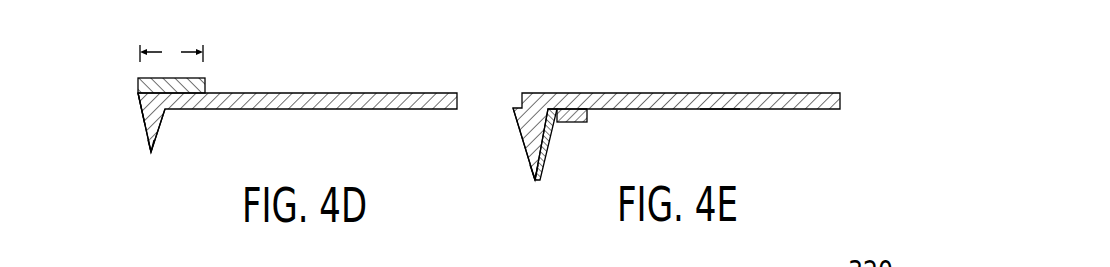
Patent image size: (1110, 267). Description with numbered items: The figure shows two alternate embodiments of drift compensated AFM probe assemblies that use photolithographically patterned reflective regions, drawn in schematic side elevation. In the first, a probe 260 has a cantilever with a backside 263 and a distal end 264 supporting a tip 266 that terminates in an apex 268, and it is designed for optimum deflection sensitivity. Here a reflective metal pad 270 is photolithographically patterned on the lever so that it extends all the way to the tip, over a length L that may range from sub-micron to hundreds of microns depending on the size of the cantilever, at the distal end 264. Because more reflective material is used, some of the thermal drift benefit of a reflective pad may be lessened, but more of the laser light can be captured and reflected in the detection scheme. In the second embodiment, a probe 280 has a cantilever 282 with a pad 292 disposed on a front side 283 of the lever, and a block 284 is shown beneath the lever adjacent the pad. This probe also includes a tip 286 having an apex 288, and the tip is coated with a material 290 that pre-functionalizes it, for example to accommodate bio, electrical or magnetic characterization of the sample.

In FIG. 4D, the probe 260 is at (388, 60).
In FIG. 4D, the backside 263 is at (270, 93).
In FIG. 4D, the distal end 264 is at (170, 132).
In FIG. 4D, the tip 266 is at (141, 116).
In FIG. 4D, the apex 268 is at (153, 155).
In FIG. 4D, the raised pad 270 is at (206, 85).
In FIG. 4E, the probe 280 is at (772, 75).
In FIG. 4E, the cantilever 282 is at (687, 98).
In FIG. 4E, the front side 283 is at (718, 110).
In FIG. 4E, the retaining block 284 is at (562, 131).
In FIG. 4E, the tip 286 is at (530, 130).
In FIG. 4E, the apex 288 is at (546, 160).
In FIG. 4E, the material 290 is at (536, 181).
In FIG. 4E, the pad 292 is at (578, 109).